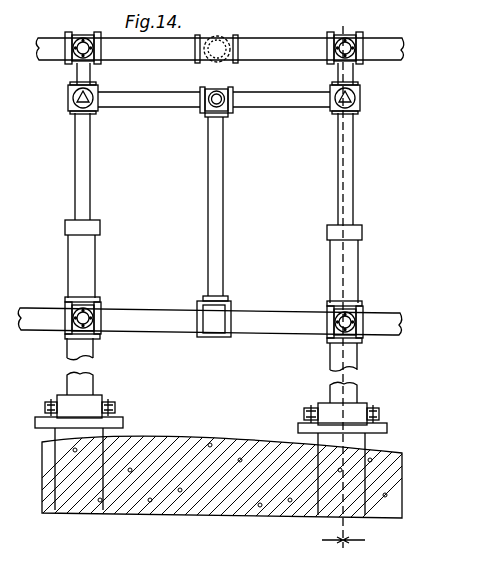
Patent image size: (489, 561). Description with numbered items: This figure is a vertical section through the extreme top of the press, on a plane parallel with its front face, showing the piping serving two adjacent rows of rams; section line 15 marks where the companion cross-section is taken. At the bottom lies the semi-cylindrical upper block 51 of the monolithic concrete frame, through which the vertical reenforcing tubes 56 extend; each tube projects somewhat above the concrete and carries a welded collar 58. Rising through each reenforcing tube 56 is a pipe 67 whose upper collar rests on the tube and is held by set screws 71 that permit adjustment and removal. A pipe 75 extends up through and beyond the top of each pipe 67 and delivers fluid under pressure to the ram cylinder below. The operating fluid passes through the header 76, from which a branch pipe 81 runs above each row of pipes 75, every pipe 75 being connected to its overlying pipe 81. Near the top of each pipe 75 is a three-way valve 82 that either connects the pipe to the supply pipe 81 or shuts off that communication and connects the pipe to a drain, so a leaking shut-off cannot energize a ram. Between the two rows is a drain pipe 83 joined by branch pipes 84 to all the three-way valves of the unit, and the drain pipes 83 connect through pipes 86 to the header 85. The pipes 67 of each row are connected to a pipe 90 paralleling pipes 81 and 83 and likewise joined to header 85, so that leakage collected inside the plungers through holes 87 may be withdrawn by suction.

The section line 15 is at (362, 24).
The upper block 51 is at (192, 444).
The reenforcing tube 56 is at (70, 402).
The collar 58 is at (390, 428).
The pipe 67 is at (95, 247).
The set screw 71 is at (116, 407).
The pipe 75 is at (355, 75).
The header 76 is at (175, 50).
The branch pipe 81 is at (72, 62).
The three-way valve 82 is at (70, 98).
The drain pipe 83 is at (205, 115).
The branch pipe 84 is at (152, 100).
The header 85 is at (385, 317).
The pipe 86 is at (224, 188).
The hole 87 is at (290, 104).
The pipe 90 is at (97, 306).